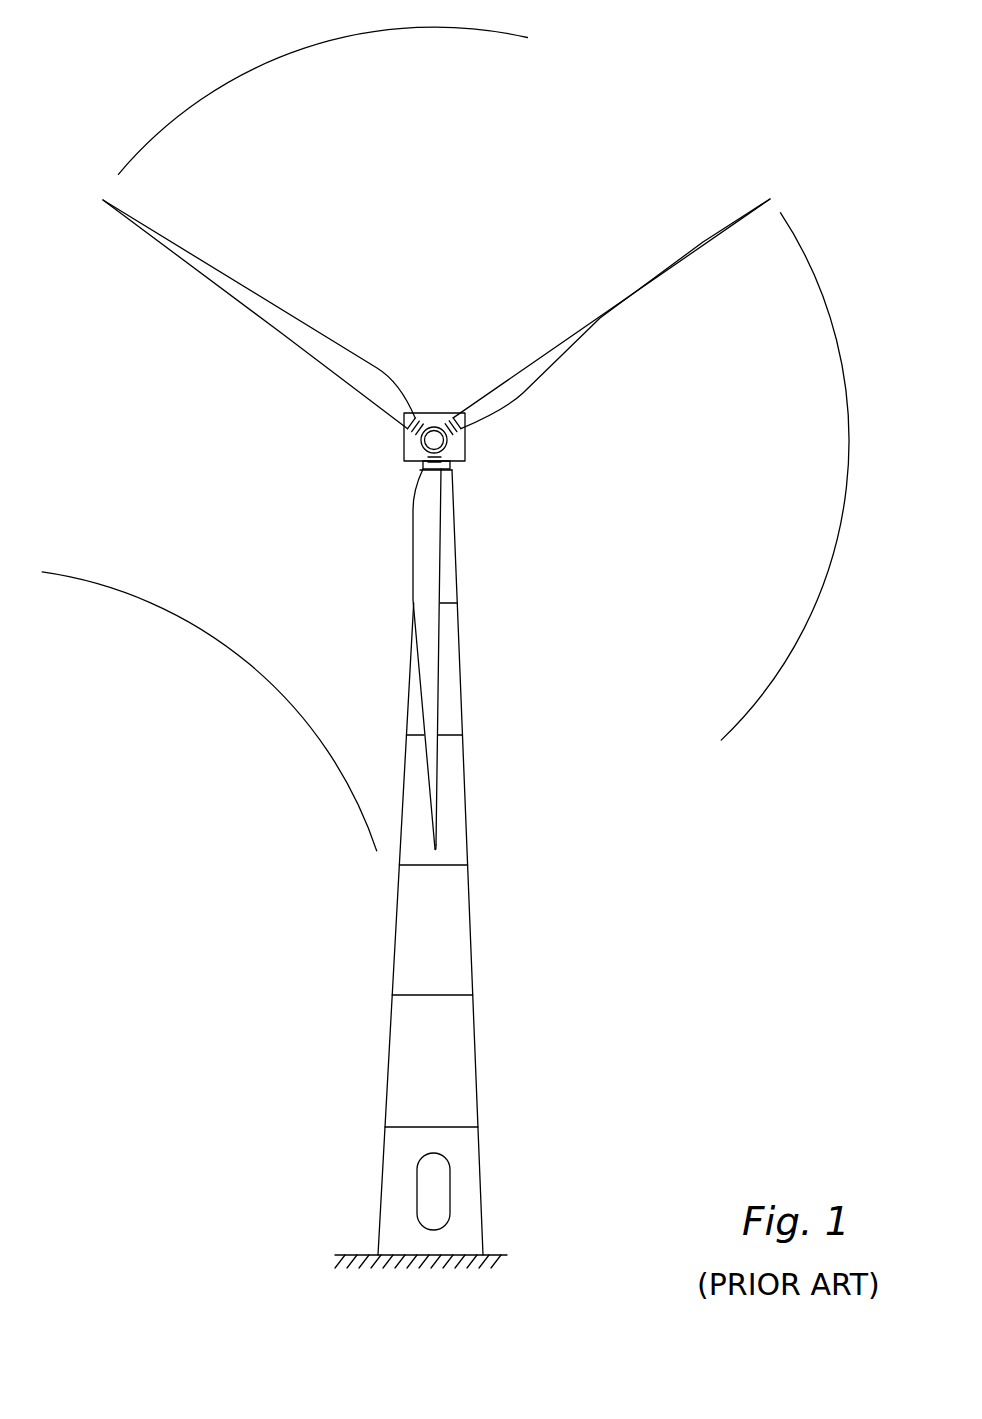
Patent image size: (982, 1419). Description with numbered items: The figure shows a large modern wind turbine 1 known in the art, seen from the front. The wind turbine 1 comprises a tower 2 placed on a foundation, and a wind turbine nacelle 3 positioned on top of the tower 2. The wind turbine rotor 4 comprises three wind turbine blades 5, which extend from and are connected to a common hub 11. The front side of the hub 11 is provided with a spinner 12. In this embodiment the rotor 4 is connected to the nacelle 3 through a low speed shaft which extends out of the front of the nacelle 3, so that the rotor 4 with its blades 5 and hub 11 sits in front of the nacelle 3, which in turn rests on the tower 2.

The wind turbine 1 is at (352, 1086).
The tower 2 is at (462, 943).
The wind turbine nacelle 3 is at (458, 461).
The wind turbine rotor 4 is at (421, 440).
The wind turbine blades 5 is at (437, 697).
The hub 11 is at (455, 438).
The spinner 12 is at (434, 441).